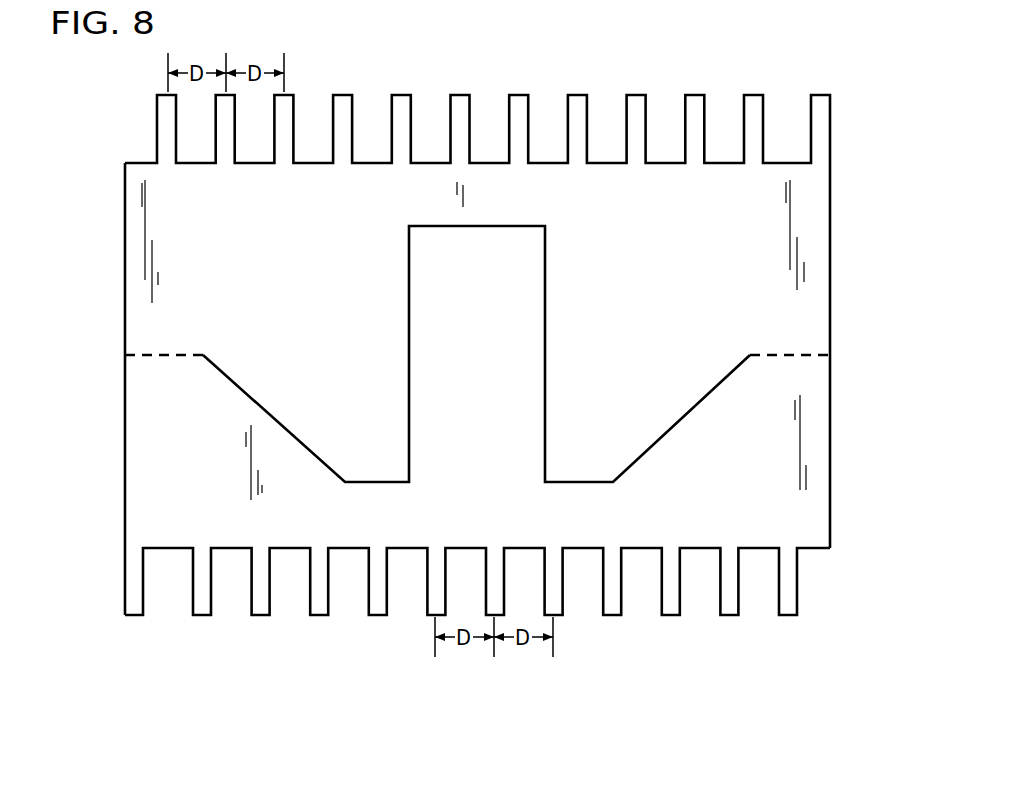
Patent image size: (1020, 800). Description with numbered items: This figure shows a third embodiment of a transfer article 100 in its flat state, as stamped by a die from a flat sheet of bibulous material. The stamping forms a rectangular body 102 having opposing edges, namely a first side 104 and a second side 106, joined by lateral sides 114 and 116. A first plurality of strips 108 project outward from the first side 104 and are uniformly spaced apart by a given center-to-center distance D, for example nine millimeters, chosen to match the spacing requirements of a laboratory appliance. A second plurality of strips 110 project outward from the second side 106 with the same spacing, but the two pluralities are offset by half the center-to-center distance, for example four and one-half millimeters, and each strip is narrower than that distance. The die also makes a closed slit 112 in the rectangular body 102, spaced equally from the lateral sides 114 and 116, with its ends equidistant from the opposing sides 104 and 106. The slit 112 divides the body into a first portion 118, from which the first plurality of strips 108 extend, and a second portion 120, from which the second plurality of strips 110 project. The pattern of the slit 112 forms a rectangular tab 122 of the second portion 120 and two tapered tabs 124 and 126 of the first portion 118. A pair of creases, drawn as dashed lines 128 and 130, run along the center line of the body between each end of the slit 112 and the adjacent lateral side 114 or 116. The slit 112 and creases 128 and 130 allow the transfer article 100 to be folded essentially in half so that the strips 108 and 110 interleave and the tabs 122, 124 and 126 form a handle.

The transfer article 100 is at (359, 626).
The rectangular body 102 is at (124, 404).
The first side 104 is at (140, 161).
The second side 106 is at (813, 550).
The first plurality of strips 108 is at (165, 127).
The second plurality of strips 110 is at (200, 604).
The closed slit 112 is at (545, 312).
The lateral side 114 is at (125, 290).
The lateral side 116 is at (832, 163).
The first portion 118 is at (296, 249).
The second portion 120 is at (207, 459).
The rectangular tab 122 is at (455, 308).
The tapered tab 124 is at (385, 402).
The tapered tab 126 is at (577, 400).
The crease 128 is at (163, 355).
The crease 130 is at (806, 355).